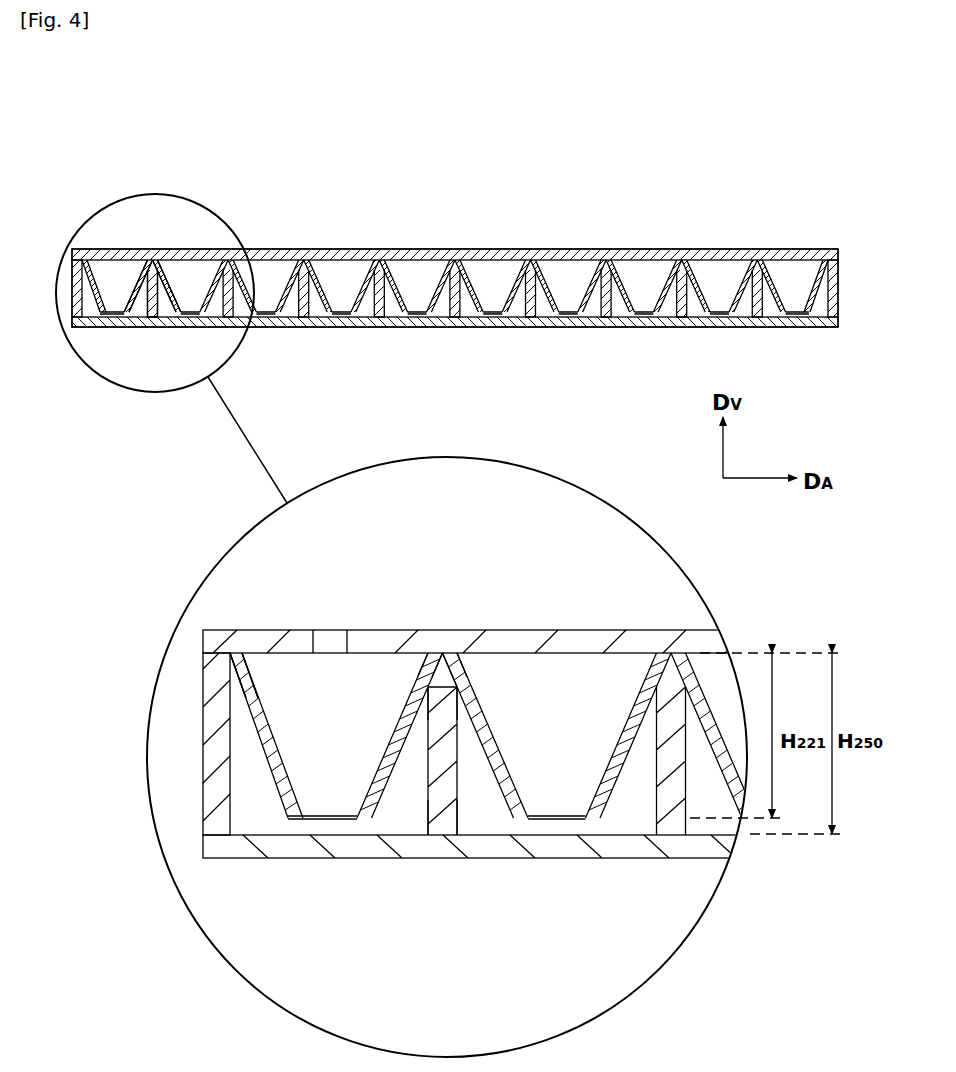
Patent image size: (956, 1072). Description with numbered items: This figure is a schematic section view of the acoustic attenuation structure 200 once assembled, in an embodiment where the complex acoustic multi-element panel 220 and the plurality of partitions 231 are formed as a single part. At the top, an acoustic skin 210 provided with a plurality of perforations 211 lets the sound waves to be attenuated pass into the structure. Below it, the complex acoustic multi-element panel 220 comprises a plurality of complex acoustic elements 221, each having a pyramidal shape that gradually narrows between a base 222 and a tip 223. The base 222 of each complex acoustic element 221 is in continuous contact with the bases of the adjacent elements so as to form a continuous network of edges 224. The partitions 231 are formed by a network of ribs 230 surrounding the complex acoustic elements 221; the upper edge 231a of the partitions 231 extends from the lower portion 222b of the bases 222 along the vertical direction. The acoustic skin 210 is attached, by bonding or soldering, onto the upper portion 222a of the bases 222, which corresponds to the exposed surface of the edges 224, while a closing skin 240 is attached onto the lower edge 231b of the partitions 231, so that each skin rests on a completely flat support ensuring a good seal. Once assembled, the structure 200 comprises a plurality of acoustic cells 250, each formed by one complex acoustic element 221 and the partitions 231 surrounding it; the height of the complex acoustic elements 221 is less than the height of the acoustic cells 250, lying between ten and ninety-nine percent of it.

The acoustic attenuation structure 200 is at (678, 148).
The acoustic skin 210 is at (570, 250).
The perforations 211 is at (193, 249).
The complex acoustic multi-element panel 220 is at (172, 278).
The complex acoustic element 221 is at (476, 280).
The base 222 is at (222, 668).
The edges 224 is at (222, 668).
The upper portion of the base 222a is at (420, 650).
The lower portion of the base 222b is at (444, 667).
The tip 223 is at (310, 815).
The network of ribs 230 is at (840, 290).
The partitions 231 is at (590, 322).
The upper edge of the partitions 231a is at (443, 682).
The lower edge of the partitions 231b is at (445, 858).
The closing skin 240 is at (690, 330).
The acoustic cell 250 is at (417, 282).